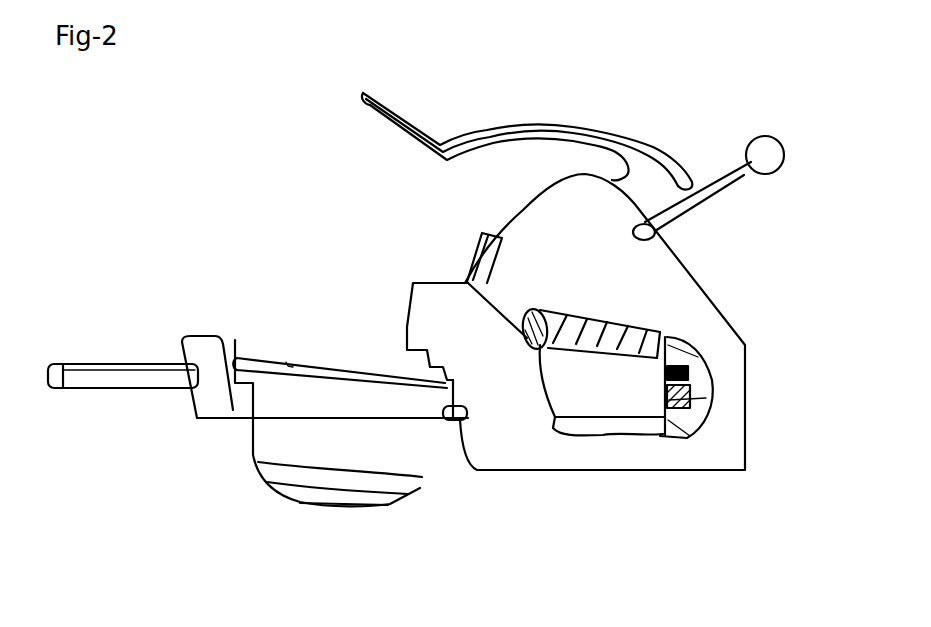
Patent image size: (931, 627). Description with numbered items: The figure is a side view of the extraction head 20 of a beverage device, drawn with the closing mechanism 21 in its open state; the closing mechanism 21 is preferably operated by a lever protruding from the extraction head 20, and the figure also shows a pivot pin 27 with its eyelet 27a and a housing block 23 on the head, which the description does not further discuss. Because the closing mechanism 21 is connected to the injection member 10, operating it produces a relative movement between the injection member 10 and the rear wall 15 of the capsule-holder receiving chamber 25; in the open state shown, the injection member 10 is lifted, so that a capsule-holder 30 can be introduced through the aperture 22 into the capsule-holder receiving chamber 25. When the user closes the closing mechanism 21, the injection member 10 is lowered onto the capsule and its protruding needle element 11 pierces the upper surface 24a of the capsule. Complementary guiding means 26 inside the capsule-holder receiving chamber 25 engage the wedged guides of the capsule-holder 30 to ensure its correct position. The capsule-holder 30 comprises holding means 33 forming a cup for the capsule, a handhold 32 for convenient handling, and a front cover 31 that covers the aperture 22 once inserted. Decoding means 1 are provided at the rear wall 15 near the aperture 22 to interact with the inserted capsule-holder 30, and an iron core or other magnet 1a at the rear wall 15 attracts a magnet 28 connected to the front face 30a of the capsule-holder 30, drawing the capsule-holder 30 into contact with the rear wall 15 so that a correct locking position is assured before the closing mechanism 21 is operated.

The decoding means 1 is at (693, 403).
The iron core or other magnet 1a is at (689, 372).
The injection member 10 is at (651, 328).
The protruding needle element 11 is at (468, 283).
The rear wall 15 is at (693, 371).
The extraction head 20 is at (660, 297).
The closing mechanism 21 is at (508, 124).
The aperture 22 is at (447, 380).
The block 23 is at (410, 313).
The upper surface 24a is at (333, 372).
The capsule-holder receiving chamber 25 is at (587, 397).
The complementary guiding means 26 is at (622, 426).
The pin 27 is at (728, 170).
The pivot eyelet 27a is at (645, 228).
The magnet 28 is at (447, 424).
The capsule-holder 30 is at (268, 402).
The front face 30a is at (452, 420).
The front cover 31 is at (193, 343).
The handhold 32 is at (112, 375).
The holding means 33 is at (268, 450).